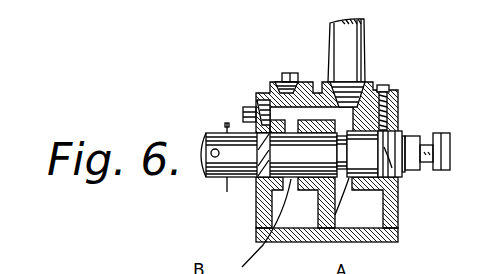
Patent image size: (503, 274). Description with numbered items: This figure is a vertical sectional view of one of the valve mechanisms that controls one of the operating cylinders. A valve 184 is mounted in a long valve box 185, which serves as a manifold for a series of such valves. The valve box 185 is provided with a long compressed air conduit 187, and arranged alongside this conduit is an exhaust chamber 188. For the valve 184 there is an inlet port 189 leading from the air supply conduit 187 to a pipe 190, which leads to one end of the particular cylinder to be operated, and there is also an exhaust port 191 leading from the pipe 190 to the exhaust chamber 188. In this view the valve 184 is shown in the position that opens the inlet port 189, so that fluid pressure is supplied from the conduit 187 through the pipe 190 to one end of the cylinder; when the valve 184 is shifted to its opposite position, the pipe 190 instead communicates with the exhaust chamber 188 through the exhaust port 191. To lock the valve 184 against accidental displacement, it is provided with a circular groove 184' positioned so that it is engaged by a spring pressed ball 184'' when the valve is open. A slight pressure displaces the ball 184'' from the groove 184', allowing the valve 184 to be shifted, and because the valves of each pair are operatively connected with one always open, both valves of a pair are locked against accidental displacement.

The valve 184 is at (311, 171).
The circular groove 184' is at (427, 163).
The spring pressed ball 184'' is at (421, 107).
The valve box 185 is at (398, 204).
The compressed air conduit 187 is at (375, 216).
The exhaust chamber 188 is at (255, 227).
The inlet port 189 is at (320, 240).
The pipe 190 is at (347, 58).
The exhaust port 191 is at (264, 226).